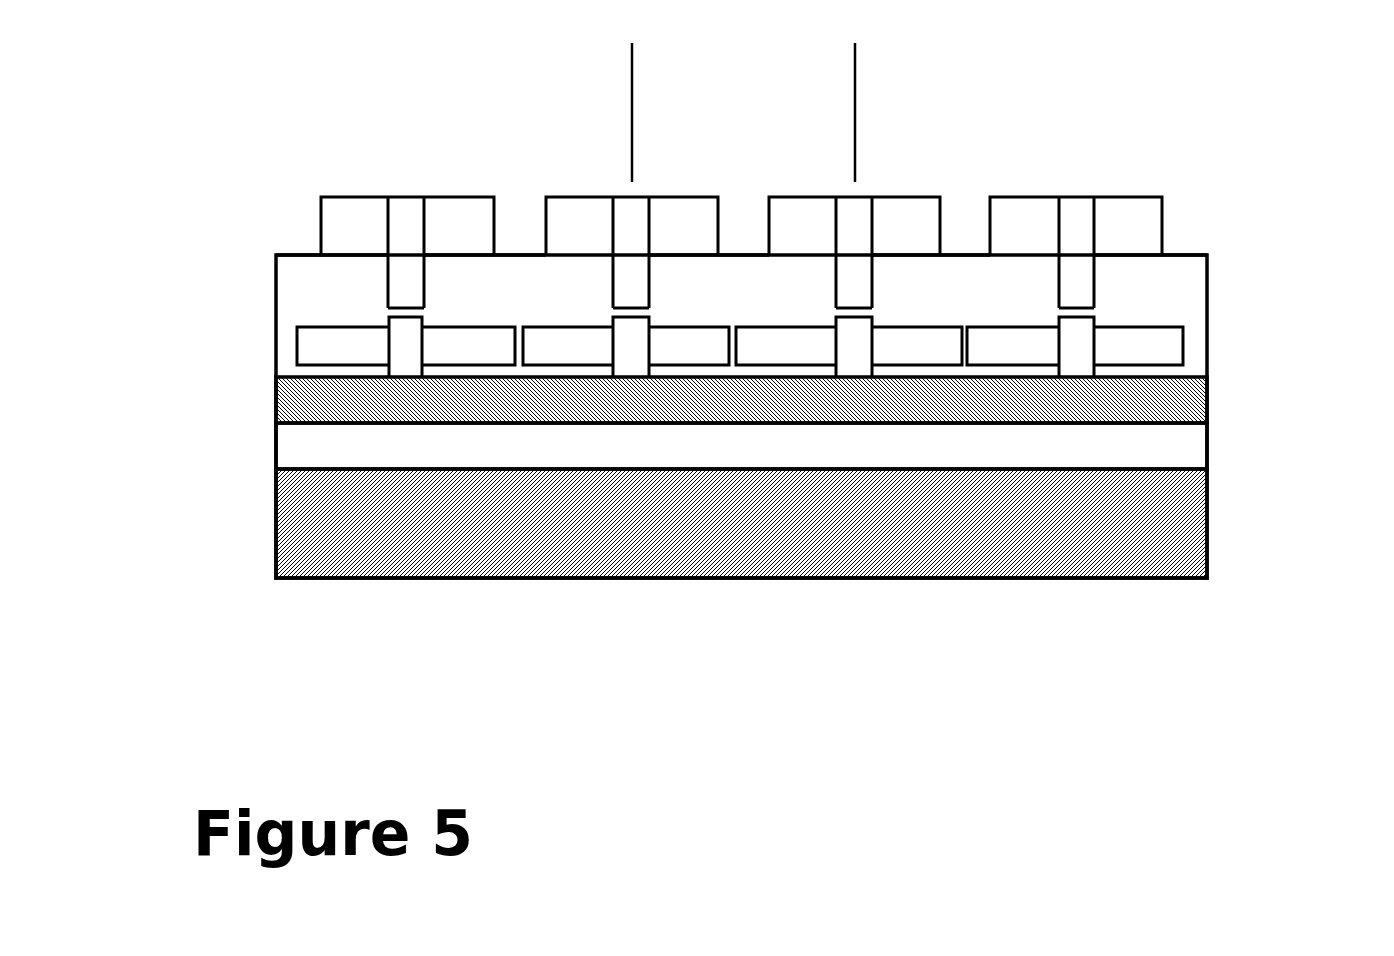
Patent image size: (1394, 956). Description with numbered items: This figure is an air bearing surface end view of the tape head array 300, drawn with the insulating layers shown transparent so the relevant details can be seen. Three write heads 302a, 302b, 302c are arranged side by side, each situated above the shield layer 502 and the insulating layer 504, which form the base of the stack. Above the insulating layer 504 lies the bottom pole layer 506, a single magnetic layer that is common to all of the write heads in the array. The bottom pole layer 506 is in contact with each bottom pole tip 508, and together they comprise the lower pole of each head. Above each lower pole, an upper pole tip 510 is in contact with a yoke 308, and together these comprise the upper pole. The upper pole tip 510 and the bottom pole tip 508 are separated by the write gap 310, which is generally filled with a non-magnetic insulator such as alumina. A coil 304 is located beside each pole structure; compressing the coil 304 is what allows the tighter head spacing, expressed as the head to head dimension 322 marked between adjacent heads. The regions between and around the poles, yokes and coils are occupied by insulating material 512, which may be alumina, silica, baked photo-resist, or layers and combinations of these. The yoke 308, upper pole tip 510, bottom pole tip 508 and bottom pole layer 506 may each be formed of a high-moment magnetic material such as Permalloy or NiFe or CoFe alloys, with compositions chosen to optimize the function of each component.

The tape head array 300 is at (740, 366).
The write head 302a is at (453, 277).
The write head 302b is at (680, 293).
The write head 302c is at (893, 290).
The coil 304 is at (344, 348).
The yoke 308 is at (362, 222).
The write gap 310 is at (407, 306).
The head to head dimension 322 is at (853, 82).
The shield layer 502 is at (982, 553).
The insulating layer 504 is at (965, 463).
The bottom pole layer 506 is at (965, 419).
The bottom pole tip 508 is at (404, 348).
The upper pole tip 510 is at (407, 283).
The insulating material 512 is at (804, 313).